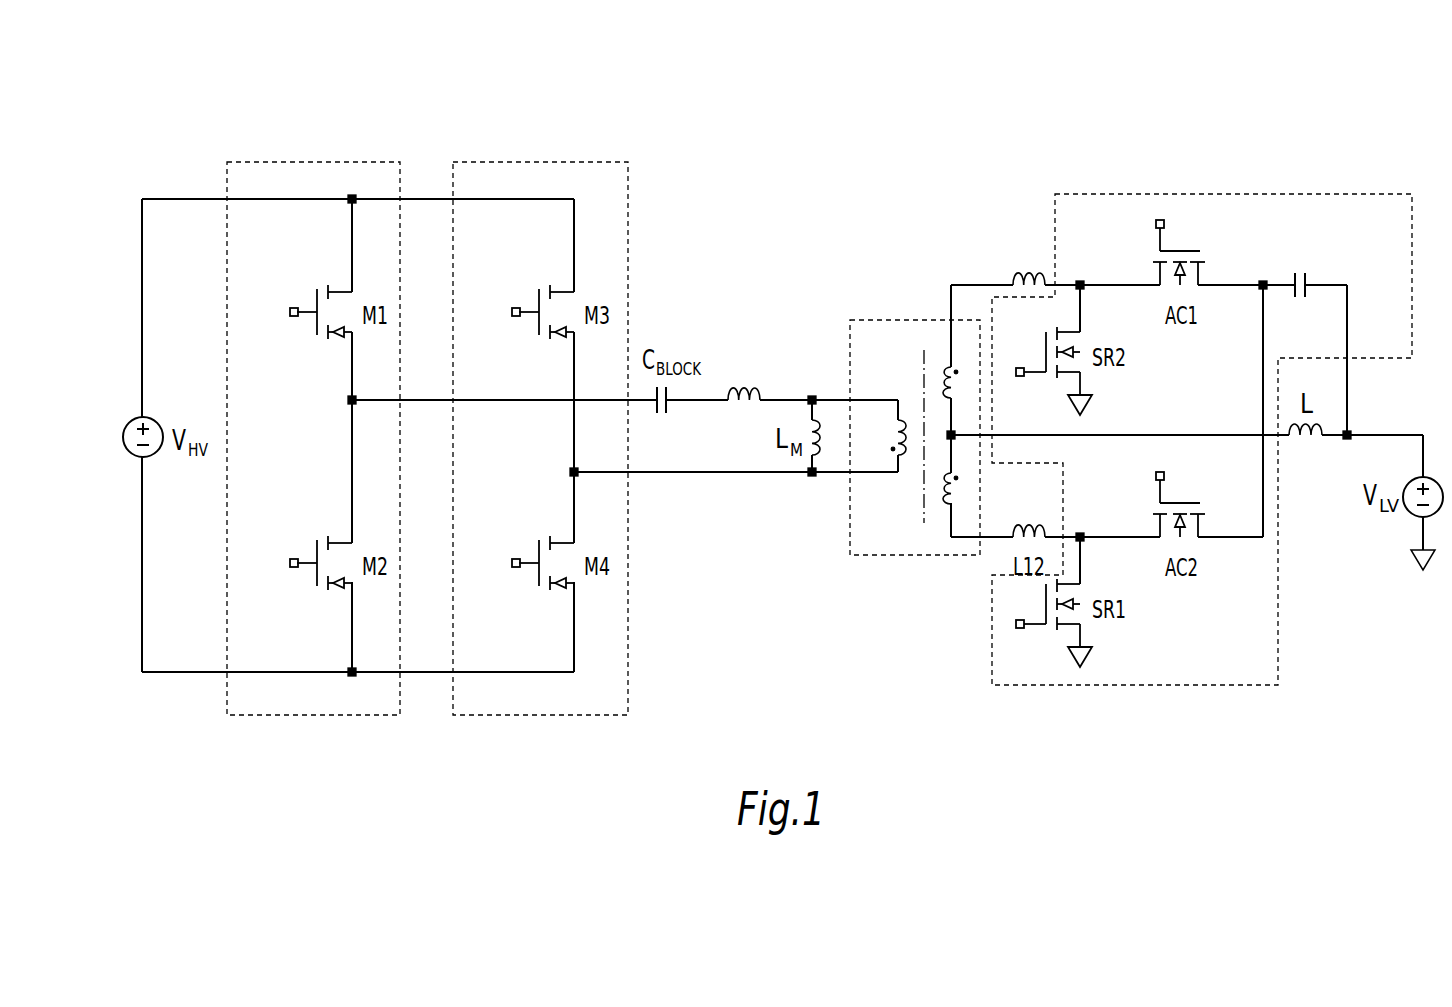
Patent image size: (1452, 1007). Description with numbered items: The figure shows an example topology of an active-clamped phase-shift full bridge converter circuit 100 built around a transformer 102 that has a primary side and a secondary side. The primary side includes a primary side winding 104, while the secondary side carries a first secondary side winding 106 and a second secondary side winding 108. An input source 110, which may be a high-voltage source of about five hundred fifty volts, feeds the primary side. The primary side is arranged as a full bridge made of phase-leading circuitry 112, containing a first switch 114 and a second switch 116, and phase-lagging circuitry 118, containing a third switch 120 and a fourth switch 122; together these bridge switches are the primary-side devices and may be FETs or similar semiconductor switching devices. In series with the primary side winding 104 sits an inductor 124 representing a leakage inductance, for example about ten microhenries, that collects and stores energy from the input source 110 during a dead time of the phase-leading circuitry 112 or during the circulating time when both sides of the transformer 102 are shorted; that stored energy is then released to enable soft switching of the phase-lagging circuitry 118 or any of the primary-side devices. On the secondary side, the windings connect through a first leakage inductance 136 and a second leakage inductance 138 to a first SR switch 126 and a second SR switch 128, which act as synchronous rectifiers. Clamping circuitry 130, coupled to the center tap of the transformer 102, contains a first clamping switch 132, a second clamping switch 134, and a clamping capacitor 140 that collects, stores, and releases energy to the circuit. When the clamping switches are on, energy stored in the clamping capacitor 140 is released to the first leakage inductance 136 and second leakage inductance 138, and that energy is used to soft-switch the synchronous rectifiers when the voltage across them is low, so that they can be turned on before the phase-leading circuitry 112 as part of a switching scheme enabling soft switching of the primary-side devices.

The active-clamped phase-shift full bridge converter circuit 100 is at (1376, 56).
The transformer 102 is at (912, 320).
The primary side winding 104 is at (906, 450).
The first secondary side winding 106 is at (945, 375).
The second secondary side winding 108 is at (945, 501).
The input source 110 is at (123, 435).
The phase-leading circuitry 112 is at (540, 162).
The first switch 114 is at (561, 541).
The second switch 116 is at (561, 290).
The phase-lagging circuitry 118 is at (313, 162).
The third switch 120 is at (338, 541).
The fourth switch 122 is at (338, 290).
The inductor 124 is at (741, 403).
The first SR switch 126 is at (1069, 624).
The second SR switch 128 is at (1069, 331).
The clamping circuitry 130 is at (1233, 194).
The first clamping switch 132 is at (1178, 250).
The second clamping switch 134 is at (1178, 500).
The first leakage inductance 136 is at (1028, 272).
The second leakage inductance 138 is at (1028, 527).
The clamping capacitor 140 is at (1307, 294).